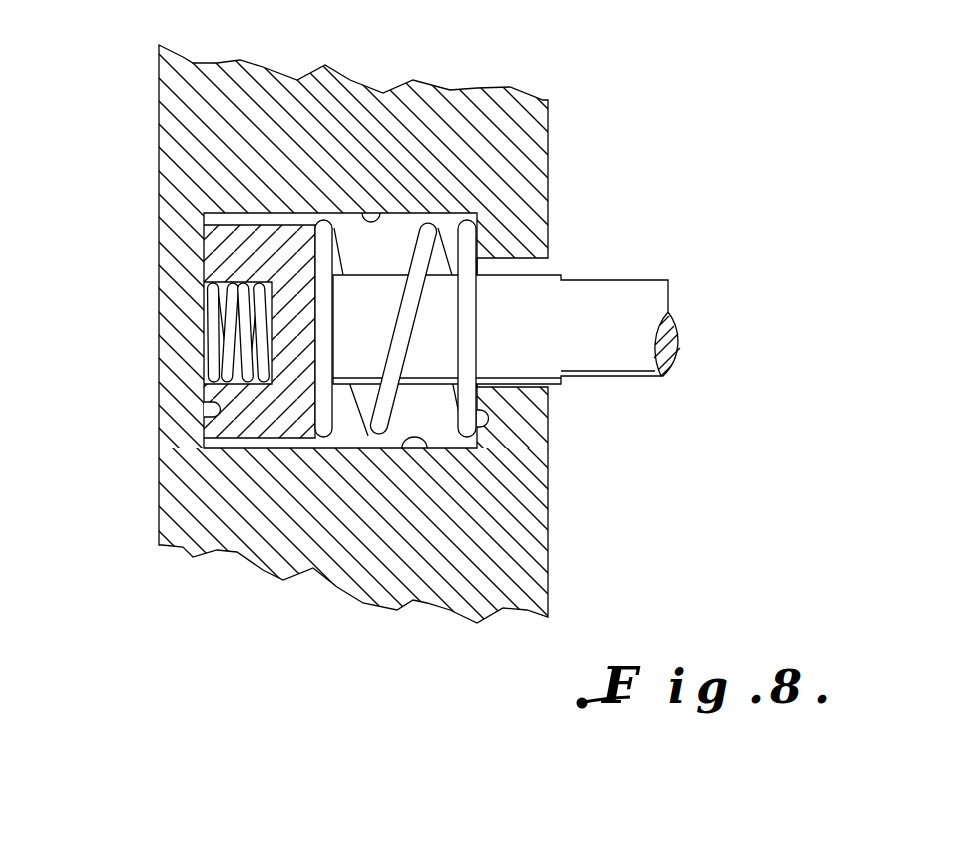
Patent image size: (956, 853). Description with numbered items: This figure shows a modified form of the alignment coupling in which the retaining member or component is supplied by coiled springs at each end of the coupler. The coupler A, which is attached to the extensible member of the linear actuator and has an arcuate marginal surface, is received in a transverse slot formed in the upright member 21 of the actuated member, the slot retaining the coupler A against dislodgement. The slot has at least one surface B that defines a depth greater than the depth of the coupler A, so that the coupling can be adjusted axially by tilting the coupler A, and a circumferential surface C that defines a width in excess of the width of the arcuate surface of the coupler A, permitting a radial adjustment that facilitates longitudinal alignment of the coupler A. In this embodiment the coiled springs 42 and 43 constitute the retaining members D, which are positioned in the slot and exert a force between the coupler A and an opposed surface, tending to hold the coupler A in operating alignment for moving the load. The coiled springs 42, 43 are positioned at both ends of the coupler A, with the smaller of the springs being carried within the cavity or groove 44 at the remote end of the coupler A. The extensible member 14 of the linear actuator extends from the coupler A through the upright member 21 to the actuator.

The shaft 14 is at (635, 288).
The upright member 21 is at (540, 552).
The coiled spring 42 is at (479, 453).
The coiled spring 43 is at (217, 302).
The cavity or groove 44 is at (253, 385).
The coupler A is at (217, 257).
The surface B is at (213, 418).
The circumferential surface C is at (380, 213).
The retaining member D is at (225, 332).